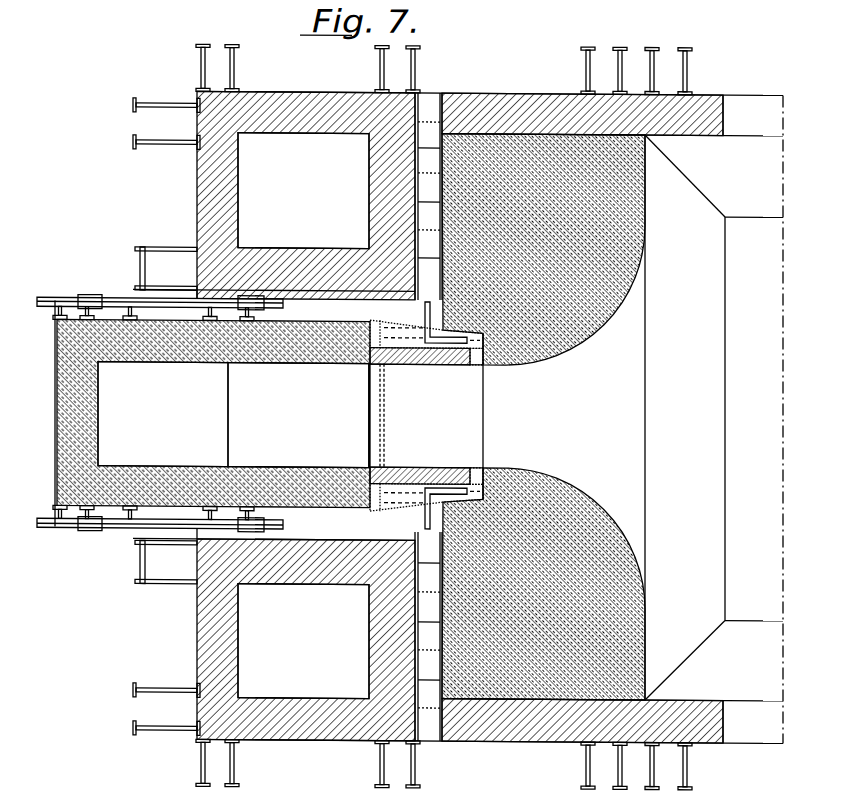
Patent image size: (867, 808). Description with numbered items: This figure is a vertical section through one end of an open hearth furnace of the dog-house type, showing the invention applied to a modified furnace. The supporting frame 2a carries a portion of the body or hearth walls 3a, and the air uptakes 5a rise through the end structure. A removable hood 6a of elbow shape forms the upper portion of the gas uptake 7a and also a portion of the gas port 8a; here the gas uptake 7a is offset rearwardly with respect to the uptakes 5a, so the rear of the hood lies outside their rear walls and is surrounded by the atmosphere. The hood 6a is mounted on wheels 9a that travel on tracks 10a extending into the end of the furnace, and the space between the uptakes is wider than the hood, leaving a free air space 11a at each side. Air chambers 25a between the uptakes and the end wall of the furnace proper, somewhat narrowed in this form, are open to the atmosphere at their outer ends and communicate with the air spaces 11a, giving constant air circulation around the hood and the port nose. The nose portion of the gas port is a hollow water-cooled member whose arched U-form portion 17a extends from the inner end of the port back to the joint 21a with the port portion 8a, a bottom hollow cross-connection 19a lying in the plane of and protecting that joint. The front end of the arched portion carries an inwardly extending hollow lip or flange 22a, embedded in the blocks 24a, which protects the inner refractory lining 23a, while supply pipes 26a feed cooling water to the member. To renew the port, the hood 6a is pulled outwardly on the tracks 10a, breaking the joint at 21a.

The supporting frame 2a is at (172, 100).
The body or hearth walls 3a is at (762, 99).
The air uptake 5a is at (303, 416).
The removable hood 6a is at (62, 418).
The gas uptake 7a is at (163, 414).
The gas port portion 8a is at (298, 415).
The wheels 9a is at (96, 304).
The tracks 10a is at (60, 295).
The free air space 11a is at (203, 413).
The arched U-form portion 17a is at (412, 343).
The bottom hollow cross-connection 19a is at (378, 410).
The joint 21a is at (368, 416).
The hollow lip or flange 22a is at (484, 464).
The inner refractory lining 23a is at (438, 469).
The blocks 24a is at (596, 312).
The air chambers 25a is at (428, 101).
The supply pipes 26a is at (424, 305).